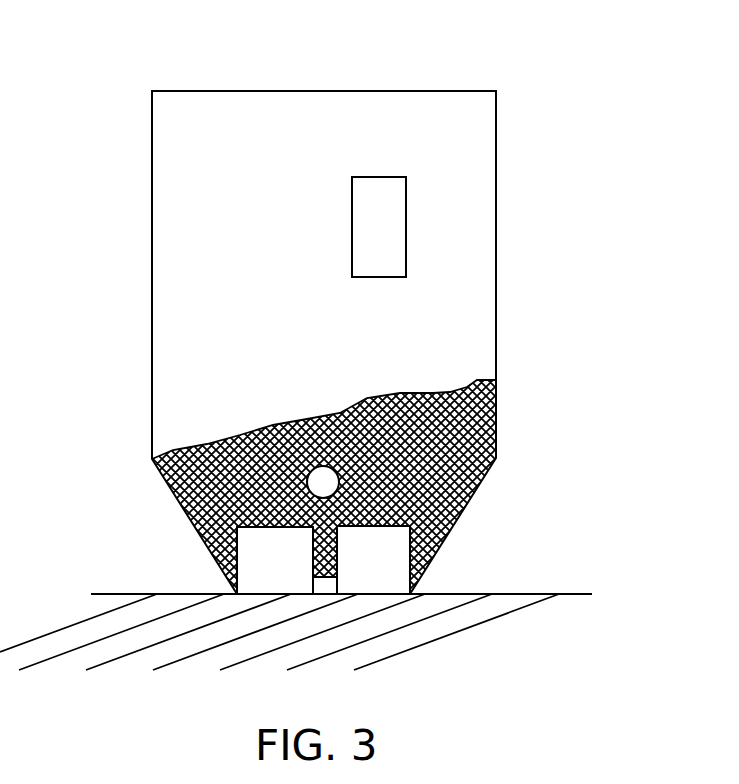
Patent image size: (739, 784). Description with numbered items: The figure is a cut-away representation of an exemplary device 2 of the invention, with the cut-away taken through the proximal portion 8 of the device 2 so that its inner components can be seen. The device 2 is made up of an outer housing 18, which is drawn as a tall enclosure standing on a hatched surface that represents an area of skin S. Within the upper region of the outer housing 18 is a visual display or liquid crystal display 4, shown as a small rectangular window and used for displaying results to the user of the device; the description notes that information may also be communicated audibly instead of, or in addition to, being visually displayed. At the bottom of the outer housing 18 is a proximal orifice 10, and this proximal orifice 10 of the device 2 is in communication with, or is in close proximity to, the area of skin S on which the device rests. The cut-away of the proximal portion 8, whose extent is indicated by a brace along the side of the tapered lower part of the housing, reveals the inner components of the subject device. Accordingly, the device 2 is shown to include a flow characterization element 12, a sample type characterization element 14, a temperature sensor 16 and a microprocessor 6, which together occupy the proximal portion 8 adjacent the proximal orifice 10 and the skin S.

The device 2 is at (550, 74).
The visual display or liquid crystal display 4 is at (397, 206).
The microprocessor 6 is at (338, 477).
The proximal portion 8 is at (150, 460).
The proximal orifice 10 is at (378, 594).
The flow characterization element 12 is at (257, 594).
The sample type characterization element 14 is at (397, 569).
The temperature sensor 16 is at (325, 587).
The outer housing 18 is at (168, 232).
The skin S is at (549, 588).